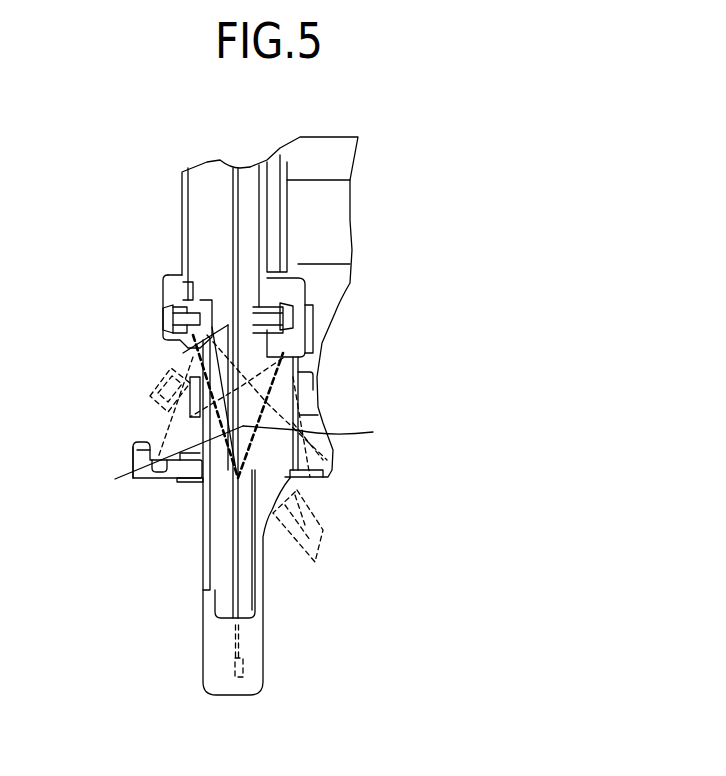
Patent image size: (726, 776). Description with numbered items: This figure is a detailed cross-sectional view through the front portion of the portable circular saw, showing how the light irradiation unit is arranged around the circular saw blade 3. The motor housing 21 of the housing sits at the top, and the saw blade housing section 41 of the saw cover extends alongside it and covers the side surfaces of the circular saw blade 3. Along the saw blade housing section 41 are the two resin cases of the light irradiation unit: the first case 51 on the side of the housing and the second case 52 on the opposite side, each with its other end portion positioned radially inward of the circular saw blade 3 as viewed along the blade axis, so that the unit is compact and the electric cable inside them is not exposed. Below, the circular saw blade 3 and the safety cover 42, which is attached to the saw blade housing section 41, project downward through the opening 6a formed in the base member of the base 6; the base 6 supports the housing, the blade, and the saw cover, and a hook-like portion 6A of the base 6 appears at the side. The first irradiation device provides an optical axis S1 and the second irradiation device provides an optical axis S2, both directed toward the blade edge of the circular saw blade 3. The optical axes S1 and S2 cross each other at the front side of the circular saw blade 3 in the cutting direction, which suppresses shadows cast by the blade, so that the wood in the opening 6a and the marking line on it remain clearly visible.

The saw blade housing section 41 is at (182, 195).
The motor housing 21 is at (338, 190).
The second case 52 is at (162, 313).
The first case 51 is at (295, 318).
The base 6 is at (133, 443).
The hook portion 6A is at (150, 483).
The opening 6a is at (187, 483).
The circular saw blade 3 is at (240, 602).
The safety cover 42 is at (255, 648).
The optical axis S1 is at (321, 433).
The optical axis S2 is at (165, 459).